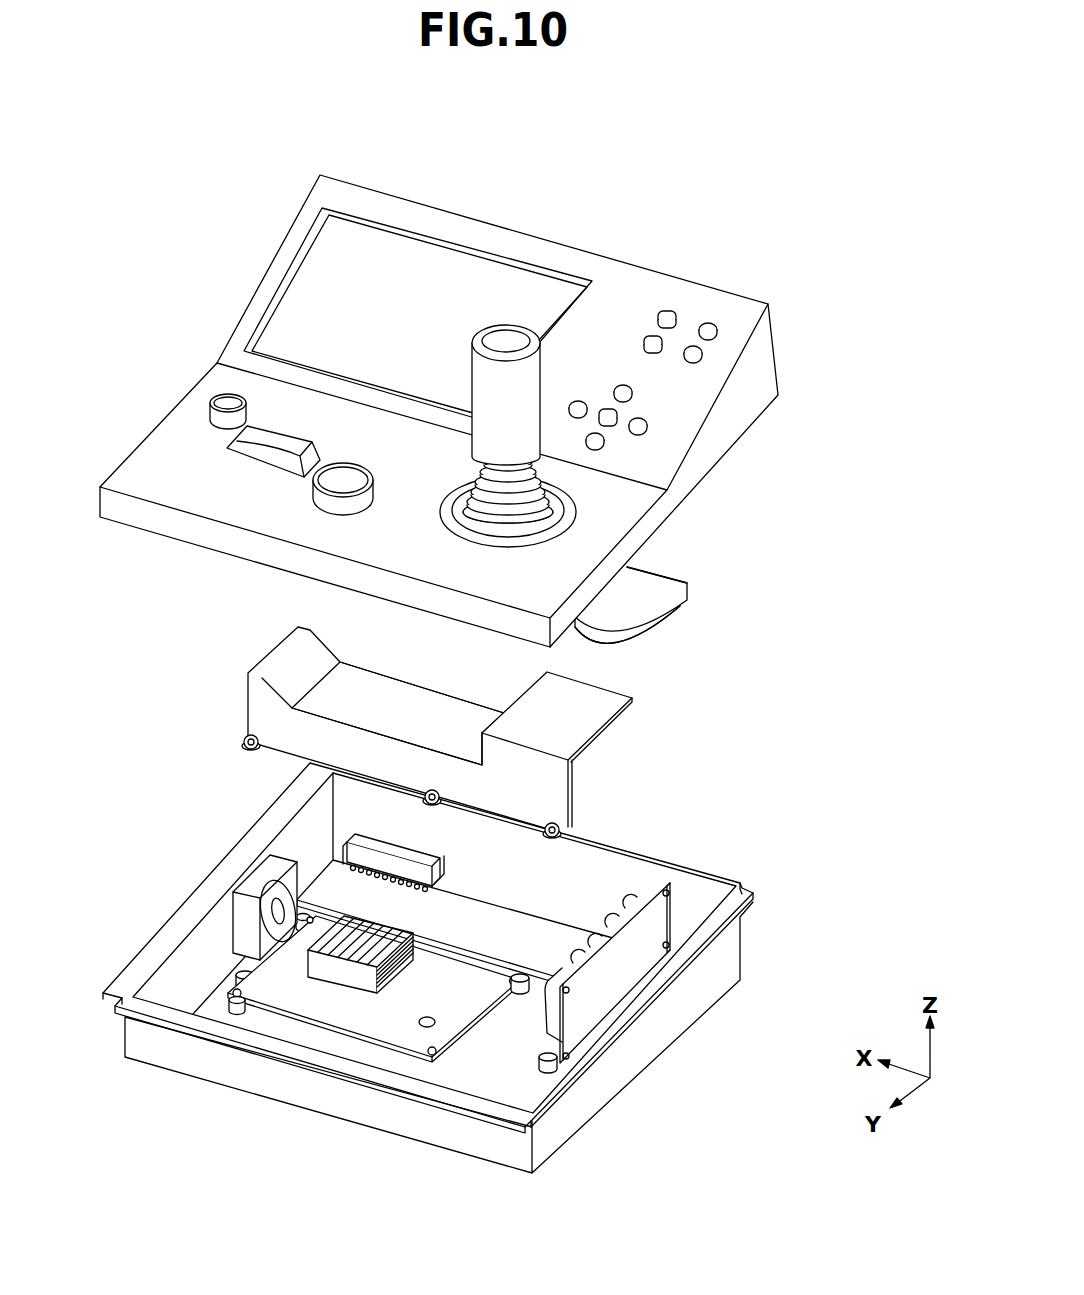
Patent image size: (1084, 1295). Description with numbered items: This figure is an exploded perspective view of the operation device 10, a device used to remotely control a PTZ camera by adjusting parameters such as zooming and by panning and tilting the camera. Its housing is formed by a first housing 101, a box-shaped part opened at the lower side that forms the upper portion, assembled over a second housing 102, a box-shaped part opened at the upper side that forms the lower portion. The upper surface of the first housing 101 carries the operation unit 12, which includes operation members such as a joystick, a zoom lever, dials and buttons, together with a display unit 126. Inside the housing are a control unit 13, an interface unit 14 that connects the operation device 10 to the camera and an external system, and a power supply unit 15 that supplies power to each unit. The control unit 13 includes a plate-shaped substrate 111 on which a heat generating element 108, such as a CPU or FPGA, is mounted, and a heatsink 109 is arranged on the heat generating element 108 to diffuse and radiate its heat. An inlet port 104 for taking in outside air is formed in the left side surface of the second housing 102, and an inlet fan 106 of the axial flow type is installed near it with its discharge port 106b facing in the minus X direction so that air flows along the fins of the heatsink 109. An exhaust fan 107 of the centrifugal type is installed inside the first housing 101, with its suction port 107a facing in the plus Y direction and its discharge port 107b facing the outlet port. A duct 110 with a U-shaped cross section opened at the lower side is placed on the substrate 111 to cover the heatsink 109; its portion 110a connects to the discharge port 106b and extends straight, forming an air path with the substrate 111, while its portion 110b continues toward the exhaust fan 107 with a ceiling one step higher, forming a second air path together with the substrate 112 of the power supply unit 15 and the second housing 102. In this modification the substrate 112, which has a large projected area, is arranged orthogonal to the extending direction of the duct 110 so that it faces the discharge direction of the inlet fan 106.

The operation device 10 is at (156, 348).
The first housing 101 is at (765, 357).
The display unit 126 is at (395, 290).
The operation unit 12 is at (355, 438).
The exhaust fan 107 is at (655, 603).
The suction port 107a is at (627, 636).
The discharge port 107b is at (657, 572).
The duct 110 is at (262, 692).
The portion of the duct 110a is at (385, 703).
The portion of the duct 110b is at (572, 717).
The second housing 102 is at (598, 1093).
The interface unit 14 is at (530, 925).
The control unit 13 is at (307, 997).
The substrate 111 is at (378, 1018).
The heatsink 109 is at (307, 943).
The heat generating element 108 is at (254, 1030).
The inlet fan 106 is at (265, 877).
The inlet port 104 is at (190, 892).
The discharge port 106b is at (265, 923).
The power supply unit 15 is at (605, 1000).
The substrate 112 is at (635, 953).